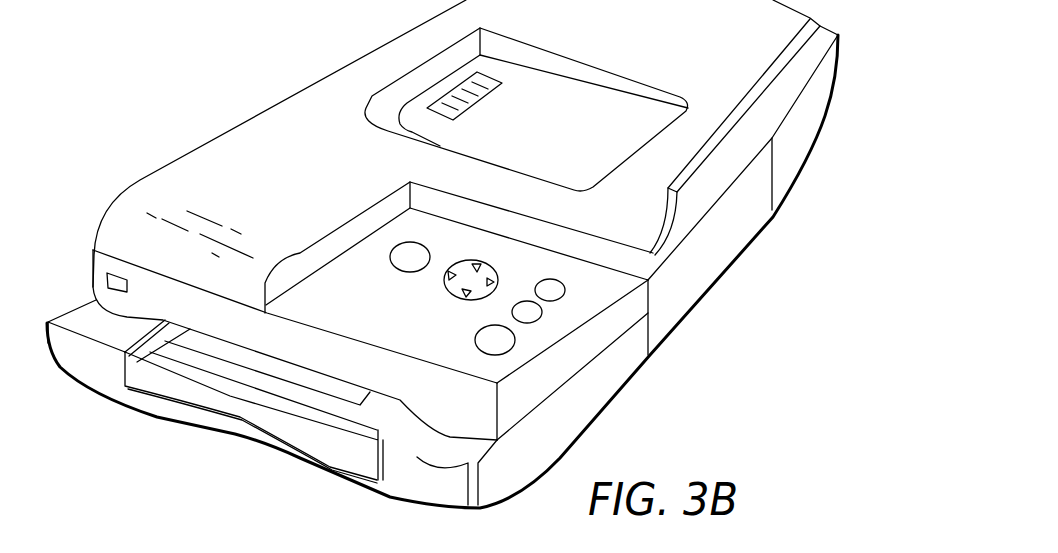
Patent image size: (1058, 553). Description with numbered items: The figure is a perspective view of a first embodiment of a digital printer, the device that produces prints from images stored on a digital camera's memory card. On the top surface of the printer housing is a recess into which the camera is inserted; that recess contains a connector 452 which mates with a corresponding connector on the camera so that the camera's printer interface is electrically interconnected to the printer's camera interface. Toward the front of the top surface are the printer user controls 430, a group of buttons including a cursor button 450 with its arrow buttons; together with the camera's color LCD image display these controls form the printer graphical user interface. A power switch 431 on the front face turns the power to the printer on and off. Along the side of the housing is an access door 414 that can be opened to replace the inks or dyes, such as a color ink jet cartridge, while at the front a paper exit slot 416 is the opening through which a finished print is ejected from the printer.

The access door 414 is at (688, 282).
The paper exit slot 416 is at (173, 368).
The printer user controls 430 is at (470, 355).
The power switch 431 is at (107, 283).
The cursor button 450 is at (570, 103).
The connector 452 is at (447, 97).